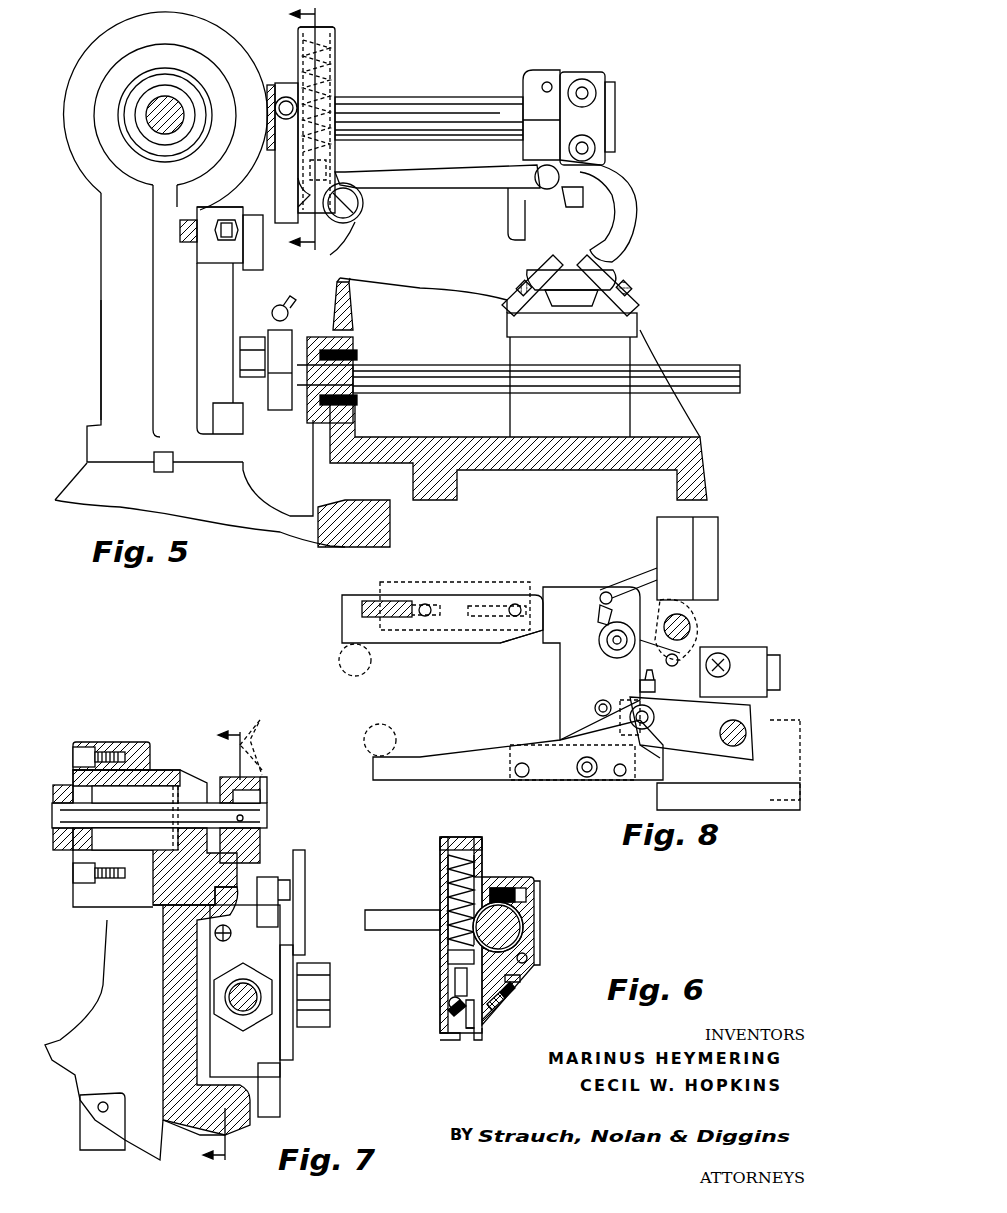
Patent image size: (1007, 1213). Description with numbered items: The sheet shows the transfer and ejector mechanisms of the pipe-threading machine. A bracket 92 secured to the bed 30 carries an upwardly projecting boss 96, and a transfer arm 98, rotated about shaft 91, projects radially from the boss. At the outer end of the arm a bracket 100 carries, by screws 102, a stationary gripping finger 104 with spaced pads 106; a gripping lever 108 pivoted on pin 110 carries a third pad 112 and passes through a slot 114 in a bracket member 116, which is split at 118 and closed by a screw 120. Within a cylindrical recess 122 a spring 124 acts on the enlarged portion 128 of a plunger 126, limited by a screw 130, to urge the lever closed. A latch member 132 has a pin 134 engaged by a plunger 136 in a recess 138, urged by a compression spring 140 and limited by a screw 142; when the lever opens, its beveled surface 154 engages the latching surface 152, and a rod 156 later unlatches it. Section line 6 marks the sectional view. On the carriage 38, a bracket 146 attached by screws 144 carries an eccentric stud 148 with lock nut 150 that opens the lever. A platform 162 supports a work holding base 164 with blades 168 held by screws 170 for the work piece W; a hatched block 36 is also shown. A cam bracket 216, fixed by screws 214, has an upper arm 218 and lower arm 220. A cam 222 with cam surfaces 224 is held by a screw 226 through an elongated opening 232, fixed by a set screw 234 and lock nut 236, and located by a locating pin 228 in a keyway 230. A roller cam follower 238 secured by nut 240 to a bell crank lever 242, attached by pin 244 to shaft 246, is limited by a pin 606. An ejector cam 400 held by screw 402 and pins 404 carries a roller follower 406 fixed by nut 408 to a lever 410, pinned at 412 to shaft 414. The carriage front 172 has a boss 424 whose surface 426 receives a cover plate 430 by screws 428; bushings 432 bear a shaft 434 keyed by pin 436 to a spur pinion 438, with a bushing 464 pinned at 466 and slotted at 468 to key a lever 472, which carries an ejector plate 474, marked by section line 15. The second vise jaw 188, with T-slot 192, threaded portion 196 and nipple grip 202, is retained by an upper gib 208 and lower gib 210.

In FIG. 5, the boss 96 is at (80, 78).
In FIG. 8, the boss 96 is at (657, 535).
In FIG. 5, the shaft 91 is at (165, 96).
In FIG. 5, the bracket 92 is at (100, 302).
In FIG. 8, the bracket 92 is at (735, 800).
In FIG. 5, the bed 30 is at (226, 511).
In FIG. 5, the ejector cam 400 is at (270, 445).
In FIG. 8, the ejector cam 400 is at (418, 765).
In FIG. 5, the lower arm 220 is at (232, 418).
In FIG. 8, the lower arm 220 is at (540, 748).
In FIG. 5, the cam bracket 216 is at (205, 323).
In FIG. 8, the cam bracket 216 is at (570, 710).
In FIG. 5, the upper arm 218 is at (216, 263).
In FIG. 8, the upper arm 218 is at (415, 595).
In FIG. 5, the lock nut 236 is at (222, 207).
In FIG. 8, the lock nut 236 is at (365, 600).
In FIG. 5, the screw 226 is at (180, 230).
In FIG. 8, the screw 226 is at (427, 603).
In FIG. 5, the set screw 234 is at (233, 232).
In FIG. 8, the set screw 234 is at (358, 603).
In FIG. 5, the cam 222 is at (255, 258).
In FIG. 8, the cam 222 is at (412, 643).
In FIG. 5, the beveled surface 154 is at (270, 168).
In FIG. 6, the beveled surface 154 is at (450, 1010).
In FIG. 5, the latch member 132 is at (280, 83).
In FIG. 6, the latch member 132 is at (470, 1040).
In FIG. 5, the rod 156 is at (275, 106).
In FIG. 6, the rod 156 is at (390, 930).
In FIG. 5, the bracket member 116 is at (335, 42).
In FIG. 6, the bracket member 116 is at (445, 845).
In FIG. 5, the spring 124 is at (298, 30).
In FIG. 6, the spring 124 is at (482, 840).
In FIG. 5, the plunger 126 is at (335, 72).
In FIG. 6, the plunger 126 is at (450, 888).
In FIG. 5, the section line 6 is at (314, 132).
In FIG. 5, the transfer arm 98 is at (487, 97).
In FIG. 6, the transfer arm 98 is at (525, 920).
In FIG. 5, the bracket 100 is at (535, 72).
In FIG. 5, the screws 102 is at (584, 80).
In FIG. 5, the pin 110 is at (536, 170).
In FIG. 5, the gripping lever 108 is at (468, 192).
In FIG. 6, the gripping lever 108 is at (475, 1010).
In FIG. 5, the third pad 112 is at (510, 227).
In FIG. 5, the lock nut 150 is at (363, 203).
In FIG. 5, the eccentric stud 148 is at (355, 218).
In FIG. 5, the stationary gripping finger 104 is at (632, 210).
In FIG. 5, the pads 106 is at (612, 250).
In FIG. 5, the screws 170 is at (633, 288).
In FIG. 5, the work holding blades 168 is at (635, 308).
In FIG. 5, the work holding base 164 is at (592, 337).
In FIG. 5, the platform 162 is at (612, 416).
In FIG. 5, the shaft 414 is at (468, 365).
In FIG. 8, the shaft 414 is at (748, 740).
In FIG. 5, the carriage 38 is at (468, 437).
In FIG. 7, the carriage 38 is at (80, 1025).
In FIG. 5, the block 36 is at (392, 503).
In FIG. 5, the screws 144 is at (355, 352).
In FIG. 5, the nut 408 is at (350, 373).
In FIG. 8, the nut 408 is at (630, 720).
In FIG. 5, the roller follower 406 is at (248, 356).
In FIG. 8, the roller follower 406 is at (655, 722).
In FIG. 5, the lever 410 is at (280, 405).
In FIG. 8, the lever 410 is at (676, 740).
In FIG. 5, the bracket 146 is at (313, 420).
In FIG. 8, the pin 244 is at (690, 600).
In FIG. 8, the opening 232 is at (428, 622).
In FIG. 8, the locating pin 228 is at (512, 603).
In FIG. 8, the keyway 230 is at (528, 603).
In FIG. 8, the cam surfaces 224 is at (514, 640).
In FIG. 8, the roller cam follower 238 is at (600, 640).
In FIG. 8, the nut 240 is at (610, 648).
In FIG. 8, the bell crank lever 242 is at (700, 622).
In FIG. 8, the shaft 246 is at (697, 630).
In FIG. 8, the pin 606 is at (655, 680).
In FIG. 8, the screws 214 is at (603, 700).
In FIG. 8, the pin 412 is at (740, 710).
In FIG. 8, the pins 404 is at (524, 778).
In FIG. 8, the screw 402 is at (588, 780).
In FIG. 7, the section line 15 is at (226, 947).
In FIG. 7, the lever 472 is at (262, 768).
In FIG. 7, the shaft 434 is at (267, 815).
In FIG. 7, the pin 466 is at (265, 830).
In FIG. 7, the boss 424 is at (180, 768).
In FIG. 7, the vertical surface 426 is at (100, 745).
In FIG. 7, the screws 428 is at (73, 757).
In FIG. 7, the bushings 432 is at (230, 777).
In FIG. 7, the pin 436 is at (160, 786).
In FIG. 7, the transverse slot 468 is at (262, 780).
In FIG. 7, the bushing 464 is at (258, 795).
In FIG. 7, the spur pinion 438 is at (73, 867).
In FIG. 7, the cover plate 430 is at (80, 910).
In FIG. 7, the carriage front 172 is at (163, 960).
In FIG. 7, the second vise jaw 188 is at (265, 1048).
In FIG. 7, the T-slot 192 is at (212, 990).
In FIG. 7, the threaded portion 196 is at (240, 982).
In FIG. 7, the threaded nipple grip 202 is at (288, 1040).
In FIG. 7, the lower gib 210 is at (276, 1085).
In FIG. 7, the upper gib 208 is at (290, 905).
In FIG. 7, the ejector plate 474 is at (305, 925).
In FIG. 7, the work piece W is at (330, 990).
In FIG. 6, the cylindrical recess 122 is at (448, 865).
In FIG. 6, the split 118 is at (505, 880).
In FIG. 6, the screw 120 is at (530, 897).
In FIG. 6, the enlarged portion 128 is at (450, 957).
In FIG. 6, the latching surface 152 is at (458, 985).
In FIG. 6, the screw 130 is at (450, 1000).
In FIG. 6, the pin 134 is at (528, 960).
In FIG. 6, the plunger 136 is at (525, 970).
In FIG. 6, the screw 142 is at (515, 985).
In FIG. 6, the compression spring 140 is at (505, 1000).
In FIG. 6, the recess 138 is at (498, 1005).
In FIG. 6, the slot 114 is at (478, 1030).